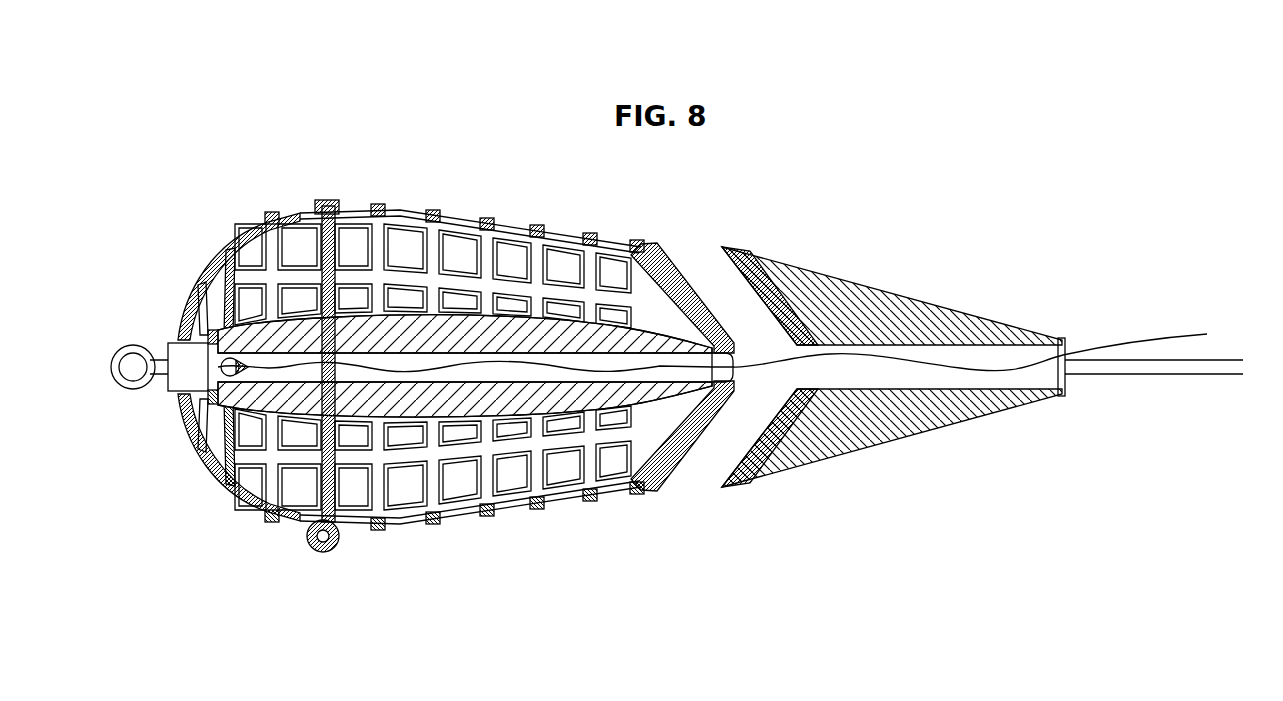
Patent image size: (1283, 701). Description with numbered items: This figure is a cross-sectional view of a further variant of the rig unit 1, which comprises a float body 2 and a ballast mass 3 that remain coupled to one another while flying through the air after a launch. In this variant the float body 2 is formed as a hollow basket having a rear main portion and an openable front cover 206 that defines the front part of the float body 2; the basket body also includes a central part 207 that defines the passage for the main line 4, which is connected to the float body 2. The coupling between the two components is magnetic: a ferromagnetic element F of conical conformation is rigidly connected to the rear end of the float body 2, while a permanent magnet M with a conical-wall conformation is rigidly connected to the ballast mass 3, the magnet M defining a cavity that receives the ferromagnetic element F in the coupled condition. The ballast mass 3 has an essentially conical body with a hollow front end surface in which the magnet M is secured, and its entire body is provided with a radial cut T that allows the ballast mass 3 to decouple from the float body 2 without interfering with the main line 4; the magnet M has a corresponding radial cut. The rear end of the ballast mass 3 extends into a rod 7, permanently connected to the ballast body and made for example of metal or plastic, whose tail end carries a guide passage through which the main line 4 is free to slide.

The rig unit 1 is at (384, 130).
The float body 2 is at (371, 523).
The ballast mass 3 is at (913, 287).
The main line 4 is at (538, 375).
The rod 7 is at (1190, 378).
The openable front cover 206 is at (227, 492).
The central part 207 is at (510, 318).
The permanent magnet M is at (742, 246).
The radial cut T is at (990, 398).
The ferromagnetic element F is at (678, 457).